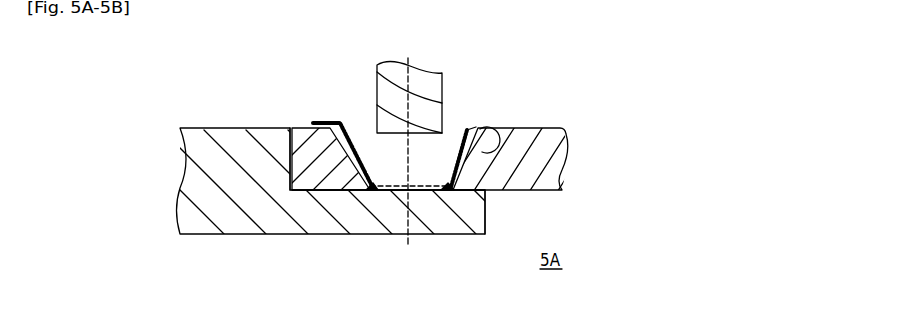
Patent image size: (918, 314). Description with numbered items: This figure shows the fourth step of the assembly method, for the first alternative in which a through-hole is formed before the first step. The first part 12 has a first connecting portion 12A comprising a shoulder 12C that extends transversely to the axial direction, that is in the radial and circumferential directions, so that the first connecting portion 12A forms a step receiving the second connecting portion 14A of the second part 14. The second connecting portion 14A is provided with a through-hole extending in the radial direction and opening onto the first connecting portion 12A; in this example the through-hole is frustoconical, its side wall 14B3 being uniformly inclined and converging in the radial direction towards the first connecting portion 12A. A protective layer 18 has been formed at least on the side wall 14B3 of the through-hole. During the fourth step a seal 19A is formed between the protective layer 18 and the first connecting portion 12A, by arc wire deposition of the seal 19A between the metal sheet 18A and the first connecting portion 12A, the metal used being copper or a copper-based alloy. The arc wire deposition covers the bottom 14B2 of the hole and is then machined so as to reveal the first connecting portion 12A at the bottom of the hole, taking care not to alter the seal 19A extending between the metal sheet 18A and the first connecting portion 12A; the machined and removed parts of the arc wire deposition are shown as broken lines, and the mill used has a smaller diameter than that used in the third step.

The first part 12 is at (211, 139).
The shoulder 12C is at (289, 145).
The first connecting portion 12A is at (448, 225).
The second part 14 is at (540, 135).
The second connecting portion 14A is at (304, 140).
The bottom of the hole 14B2 is at (385, 195).
The side wall 14B3 is at (503, 133).
The protective layer 18 is at (346, 128).
The metal sheet 18A is at (461, 137).
The seal 19A is at (443, 184).